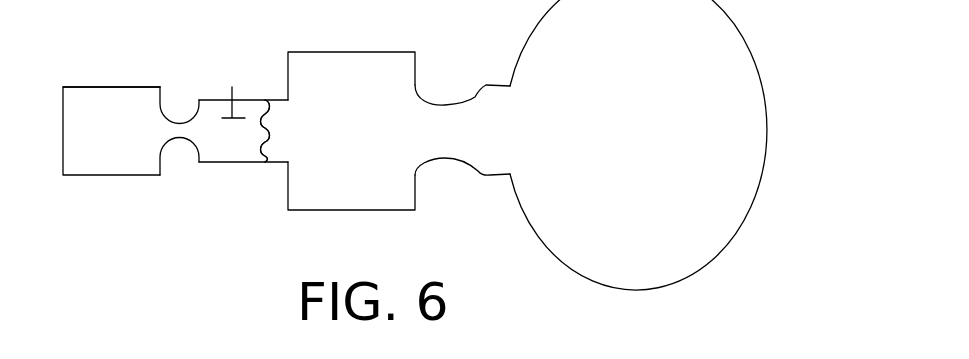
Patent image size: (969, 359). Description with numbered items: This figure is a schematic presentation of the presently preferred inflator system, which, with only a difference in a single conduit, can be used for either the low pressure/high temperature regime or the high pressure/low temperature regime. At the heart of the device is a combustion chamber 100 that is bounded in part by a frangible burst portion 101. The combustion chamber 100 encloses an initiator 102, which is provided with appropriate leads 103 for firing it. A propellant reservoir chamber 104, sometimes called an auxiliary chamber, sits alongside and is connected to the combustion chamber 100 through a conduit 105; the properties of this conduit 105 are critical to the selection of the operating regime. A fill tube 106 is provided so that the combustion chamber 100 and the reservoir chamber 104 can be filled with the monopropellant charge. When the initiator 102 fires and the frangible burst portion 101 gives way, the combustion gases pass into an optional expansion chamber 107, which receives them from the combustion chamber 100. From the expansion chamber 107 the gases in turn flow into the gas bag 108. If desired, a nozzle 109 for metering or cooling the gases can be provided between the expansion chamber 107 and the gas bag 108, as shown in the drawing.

The combustion chamber 100 is at (230, 144).
The frangible burst portion 101 is at (268, 130).
The initiator 102 is at (258, 100).
The leads 103 is at (232, 98).
The propellant reservoir chamber 104 is at (131, 144).
The conduit 105 is at (178, 141).
The fill tube 106 is at (95, 87).
The expansion chamber 107 is at (391, 144).
The gas bag 108 is at (666, 138).
The nozzle 109 is at (447, 103).